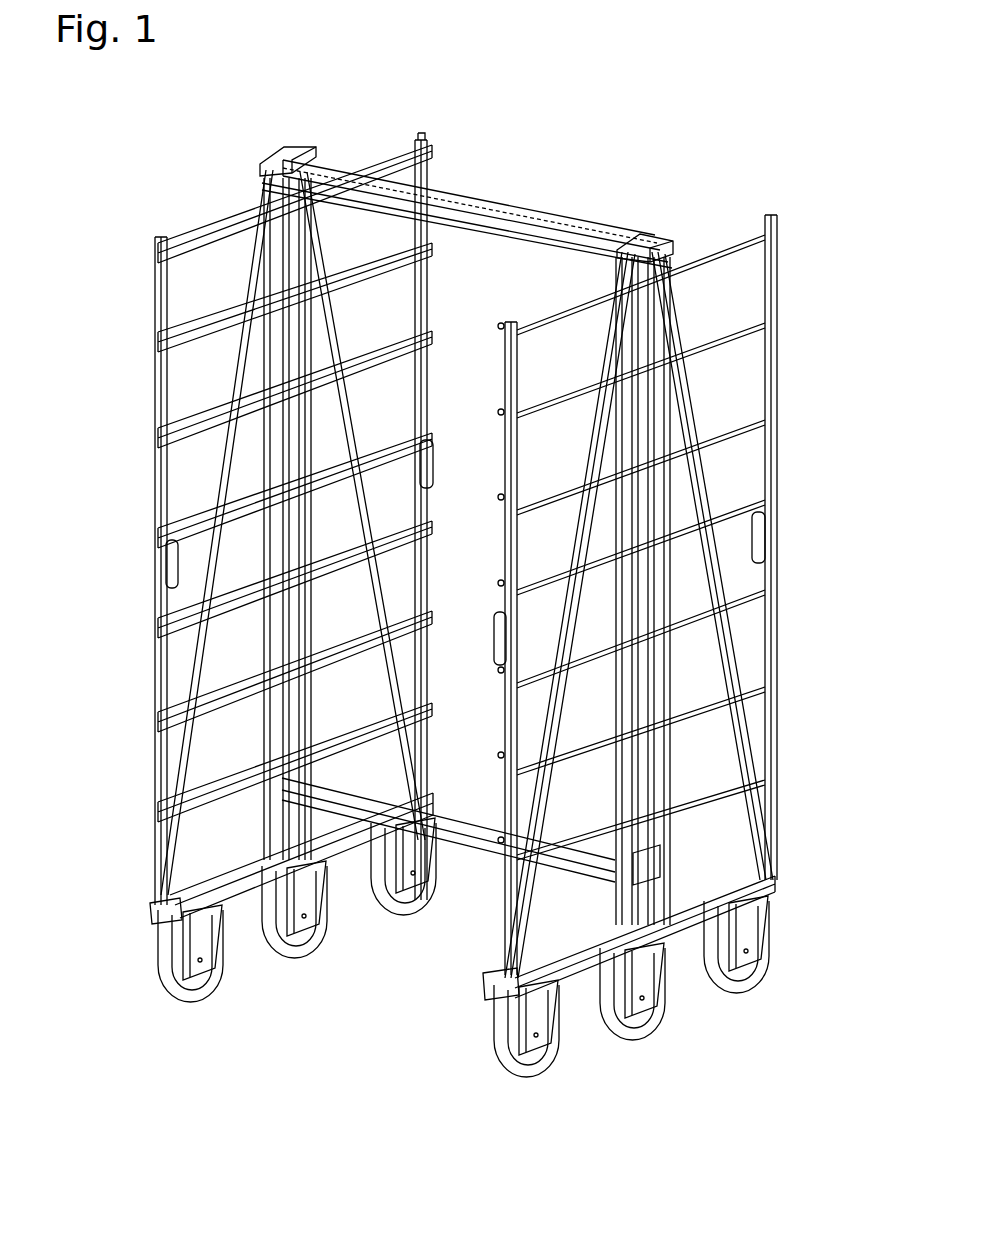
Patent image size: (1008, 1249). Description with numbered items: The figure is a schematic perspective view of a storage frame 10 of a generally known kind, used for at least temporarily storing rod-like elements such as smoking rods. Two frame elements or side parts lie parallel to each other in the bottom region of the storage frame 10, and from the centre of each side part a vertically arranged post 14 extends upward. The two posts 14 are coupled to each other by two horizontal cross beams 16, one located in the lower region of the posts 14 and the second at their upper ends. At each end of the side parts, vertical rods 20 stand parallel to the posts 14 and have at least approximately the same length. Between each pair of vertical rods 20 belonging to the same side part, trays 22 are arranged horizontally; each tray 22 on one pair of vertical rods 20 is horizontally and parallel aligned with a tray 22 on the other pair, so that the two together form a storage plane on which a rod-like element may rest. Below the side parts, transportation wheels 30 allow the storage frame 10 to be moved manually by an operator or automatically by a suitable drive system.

The storage frame 10 is at (150, 182).
The posts 14 is at (287, 630).
The horizontal cross beams 16 is at (425, 800).
The vertical rods 20 is at (163, 300).
The trays 22 is at (212, 518).
The transportation wheels 30 is at (493, 1030).